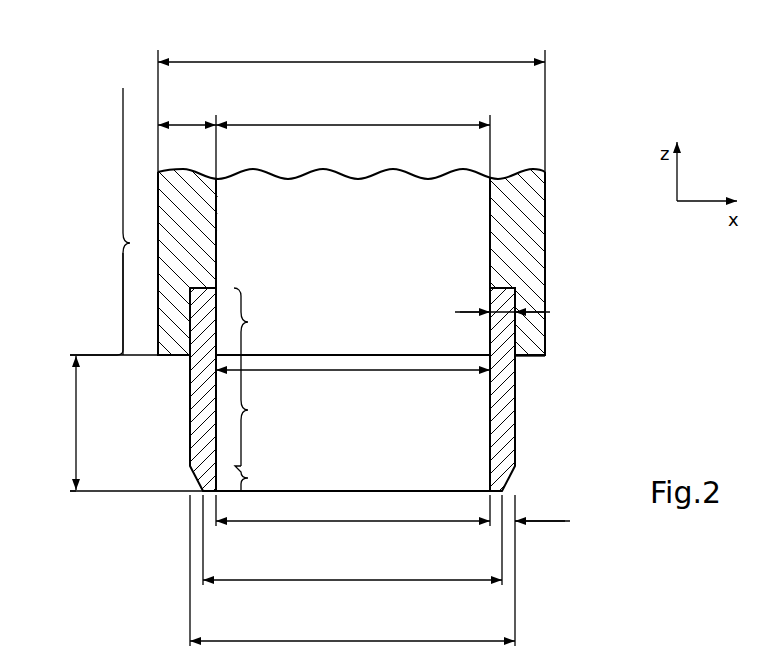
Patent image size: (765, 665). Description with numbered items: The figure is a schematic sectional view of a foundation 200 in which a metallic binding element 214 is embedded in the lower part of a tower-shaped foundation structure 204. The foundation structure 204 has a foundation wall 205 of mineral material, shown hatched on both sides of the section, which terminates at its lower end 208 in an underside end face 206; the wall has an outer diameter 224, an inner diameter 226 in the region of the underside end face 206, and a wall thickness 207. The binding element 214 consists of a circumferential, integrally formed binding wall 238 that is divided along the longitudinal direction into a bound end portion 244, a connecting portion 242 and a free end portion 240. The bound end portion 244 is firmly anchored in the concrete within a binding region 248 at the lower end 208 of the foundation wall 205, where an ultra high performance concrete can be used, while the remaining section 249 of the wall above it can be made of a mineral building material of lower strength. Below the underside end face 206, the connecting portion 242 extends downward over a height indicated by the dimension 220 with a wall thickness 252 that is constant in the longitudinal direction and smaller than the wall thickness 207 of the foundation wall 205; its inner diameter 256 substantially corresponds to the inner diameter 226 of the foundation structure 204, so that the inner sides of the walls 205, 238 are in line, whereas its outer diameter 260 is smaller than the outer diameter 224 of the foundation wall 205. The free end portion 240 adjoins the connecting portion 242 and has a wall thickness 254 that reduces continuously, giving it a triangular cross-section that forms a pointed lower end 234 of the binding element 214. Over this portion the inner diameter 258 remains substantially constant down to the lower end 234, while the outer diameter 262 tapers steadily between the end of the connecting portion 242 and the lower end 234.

The foundation 200 is at (655, 85).
The tower-shaped foundation structure 204 is at (548, 178).
The foundation wall 205 is at (525, 238).
The underside end face 206 is at (516, 357).
The wall thickness of the foundation wall 207 is at (188, 125).
The lower end of the foundation wall 208 is at (585, 357).
The binding element 214 is at (512, 452).
The insert height 220 is at (76, 420).
The outer diameter of the foundation wall 224 is at (352, 62).
The inner diameter of the tower-shaped foundation structure 226 is at (352, 125).
The pointed lower end 234 is at (485, 495).
The binding wall 238 is at (500, 425).
The free end portion 240 is at (262, 478).
The connecting portion 242 is at (265, 410).
The bound end portion 244 is at (262, 321).
The binding region 248 is at (122, 292).
The remaining section 249 is at (122, 152).
The wall thickness of the connecting section 252 is at (497, 306).
The wall thickness of the free end portion 254 is at (548, 521).
The inner diameter of the connection section 256 is at (348, 368).
The inner diameter of the free end portion 258 is at (355, 521).
The outer diameter of the connecting section 260 is at (355, 641).
The outer diameter of the free end portion 262 is at (355, 580).